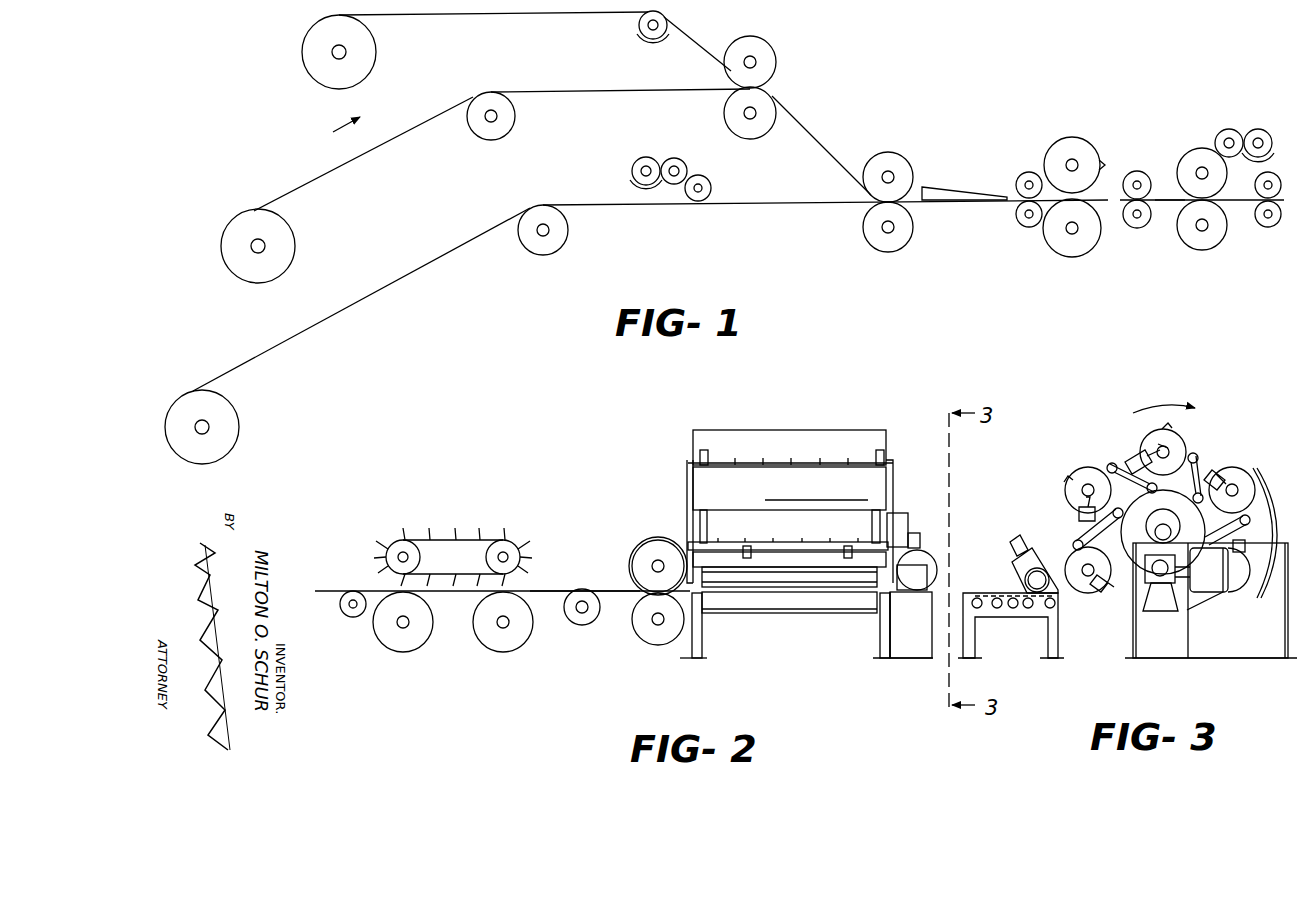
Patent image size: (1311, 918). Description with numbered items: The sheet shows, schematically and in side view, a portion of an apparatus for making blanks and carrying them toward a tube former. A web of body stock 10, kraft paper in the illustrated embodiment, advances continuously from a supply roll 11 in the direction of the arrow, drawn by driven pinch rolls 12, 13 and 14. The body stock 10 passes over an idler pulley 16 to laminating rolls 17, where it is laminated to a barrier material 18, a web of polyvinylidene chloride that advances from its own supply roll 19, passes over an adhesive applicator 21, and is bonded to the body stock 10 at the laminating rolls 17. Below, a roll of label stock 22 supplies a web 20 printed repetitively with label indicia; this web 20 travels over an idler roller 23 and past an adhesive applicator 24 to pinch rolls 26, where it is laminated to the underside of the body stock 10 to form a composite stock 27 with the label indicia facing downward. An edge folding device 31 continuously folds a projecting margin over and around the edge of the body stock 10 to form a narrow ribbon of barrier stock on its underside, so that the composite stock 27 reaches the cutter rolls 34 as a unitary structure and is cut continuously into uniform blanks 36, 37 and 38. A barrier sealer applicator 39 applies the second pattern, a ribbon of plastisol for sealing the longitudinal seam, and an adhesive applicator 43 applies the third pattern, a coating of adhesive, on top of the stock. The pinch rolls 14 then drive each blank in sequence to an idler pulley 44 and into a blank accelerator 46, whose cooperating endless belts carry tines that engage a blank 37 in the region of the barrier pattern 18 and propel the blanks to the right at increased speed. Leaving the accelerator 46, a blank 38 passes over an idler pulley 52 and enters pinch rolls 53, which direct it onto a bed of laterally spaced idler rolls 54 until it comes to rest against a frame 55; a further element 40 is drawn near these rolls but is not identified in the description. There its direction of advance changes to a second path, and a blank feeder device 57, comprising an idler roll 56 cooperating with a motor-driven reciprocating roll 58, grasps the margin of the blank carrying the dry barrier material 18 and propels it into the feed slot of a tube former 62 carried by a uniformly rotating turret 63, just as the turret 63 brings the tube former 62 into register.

In FIG. 1, the web of body stock 10 is at (318, 172).
In FIG. 1, the supply roll 11 is at (222, 238).
In FIG. 1, the pinch rolls 12 is at (1026, 228).
In FIG. 1, the pinch rolls 13 is at (1137, 228).
In FIG. 1, the pinch rolls 14 is at (1268, 228).
In FIG. 1, the idler pulley 16 is at (487, 141).
In FIG. 1, the laminating rolls 17 is at (757, 37).
In FIG. 1, the barrier material 18 is at (526, 14).
In FIG. 1, the supply roll 19 is at (310, 78).
In FIG. 1, the web of label stock 20 is at (330, 318).
In FIG. 1, the adhesive applicator 21 is at (645, 40).
In FIG. 1, the roll of label stock 22 is at (178, 460).
In FIG. 1, the idler roller 23 is at (545, 254).
In FIG. 1, the adhesive applicator 24 is at (634, 165).
In FIG. 1, the pinch rolls 26 is at (881, 253).
In FIG. 1, the composite stock 27 is at (920, 210).
In FIG. 1, the edge folding device 31 is at (975, 188).
In FIG. 1, the cutter rolls 34 is at (1073, 137).
In FIG. 1, the blank 36 is at (1170, 198).
In FIG. 2, the blank 36 is at (328, 588).
In FIG. 2, the blank 37 is at (466, 590).
In FIG. 2, the blank 38 is at (608, 589).
In FIG. 1, the barrier sealer applicator 39 is at (1268, 132).
In FIG. 2, the roller 40 is at (835, 586).
In FIG. 3, the roller 40 is at (1000, 600).
In FIG. 1, the adhesive applicator 43 is at (1200, 148).
In FIG. 2, the idler pulley 44 is at (350, 612).
In FIG. 2, the blank accelerator 46 is at (455, 662).
In FIG. 2, the idler pulley 52 is at (582, 627).
In FIG. 2, the pinch rolls 53 is at (648, 540).
In FIG. 2, the idler rolls 54 is at (775, 607).
In FIG. 3, the idler rolls 54 is at (988, 608).
In FIG. 2, the frame 55 is at (893, 596).
In FIG. 3, the frame 55 is at (985, 595).
In FIG. 3, the idler roll 56 is at (1053, 607).
In FIG. 2, the blank feeder device 57 is at (672, 522).
In FIG. 3, the blank feeder device 57 is at (1030, 534).
In FIG. 3, the reciprocating roll 58 is at (1031, 570).
In FIG. 3, the tube former 62 is at (1100, 592).
In FIG. 3, the turret 63 is at (1094, 444).